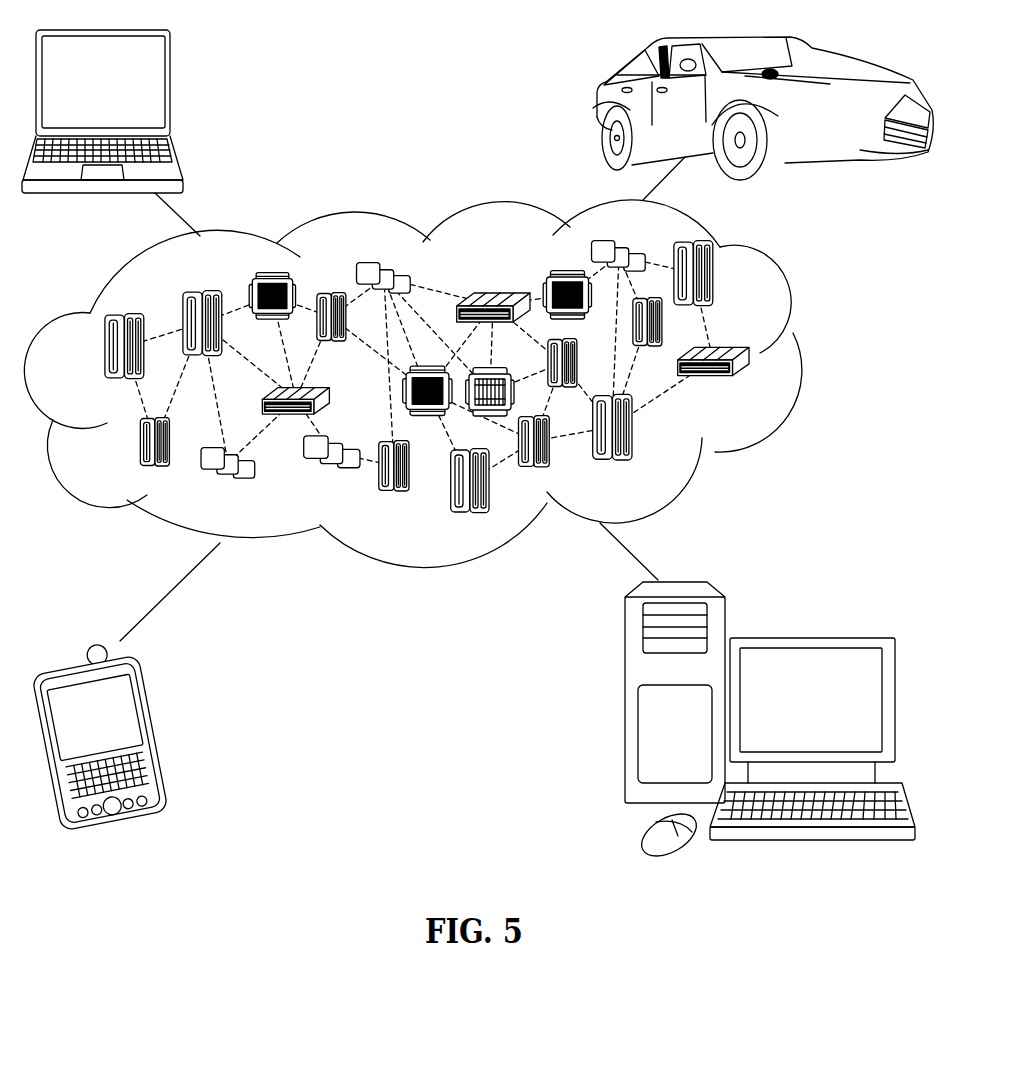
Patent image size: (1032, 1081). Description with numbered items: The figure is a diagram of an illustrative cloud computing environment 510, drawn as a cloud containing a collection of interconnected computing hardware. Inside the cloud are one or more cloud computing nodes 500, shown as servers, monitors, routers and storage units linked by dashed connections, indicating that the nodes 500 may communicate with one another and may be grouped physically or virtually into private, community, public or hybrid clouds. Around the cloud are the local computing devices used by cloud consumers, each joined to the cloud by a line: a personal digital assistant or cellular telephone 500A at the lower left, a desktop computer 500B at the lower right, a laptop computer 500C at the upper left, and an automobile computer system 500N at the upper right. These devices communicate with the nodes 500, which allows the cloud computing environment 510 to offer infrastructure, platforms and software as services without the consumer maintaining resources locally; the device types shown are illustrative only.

The cloud computing nodes 500 is at (453, 384).
The cloud computing environment 510 is at (808, 357).
The personal digital assistant or cellular telephone 500A is at (160, 731).
The desktop computer 500B is at (808, 637).
The laptop computer 500C is at (171, 90).
The automobile computer system 500N is at (597, 108).